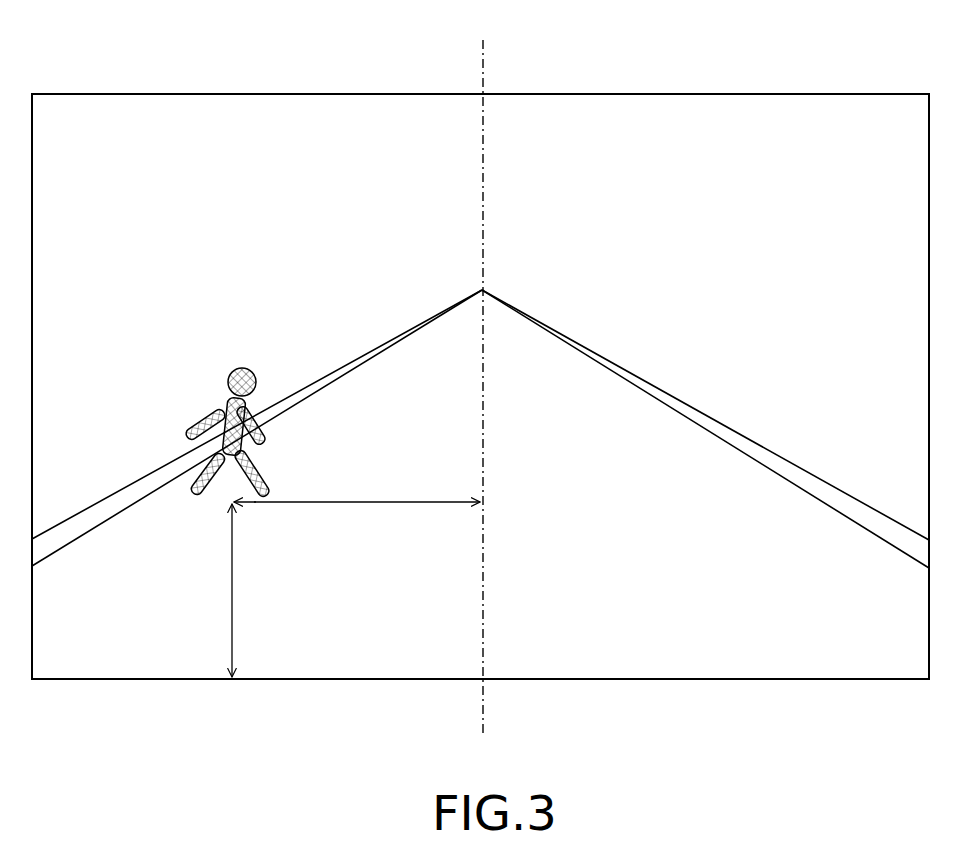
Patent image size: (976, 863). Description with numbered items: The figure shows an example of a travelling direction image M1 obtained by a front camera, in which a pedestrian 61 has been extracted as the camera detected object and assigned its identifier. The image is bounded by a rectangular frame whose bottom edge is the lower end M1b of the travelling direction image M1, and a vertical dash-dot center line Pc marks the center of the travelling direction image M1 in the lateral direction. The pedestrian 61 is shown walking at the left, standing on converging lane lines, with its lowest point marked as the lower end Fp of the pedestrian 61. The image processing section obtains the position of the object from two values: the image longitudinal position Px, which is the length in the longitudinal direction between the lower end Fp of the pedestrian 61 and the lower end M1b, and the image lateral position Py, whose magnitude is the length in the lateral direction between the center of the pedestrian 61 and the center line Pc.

The travelling direction image M1 is at (119, 94).
The lower end of the travelling direction image M1b is at (373, 681).
The center line Pc is at (478, 370).
The pedestrian 61 is at (241, 368).
The lower end of the pedestrian Fp is at (256, 504).
The image lateral position Py is at (357, 490).
The image longitudinal position Px is at (216, 590).